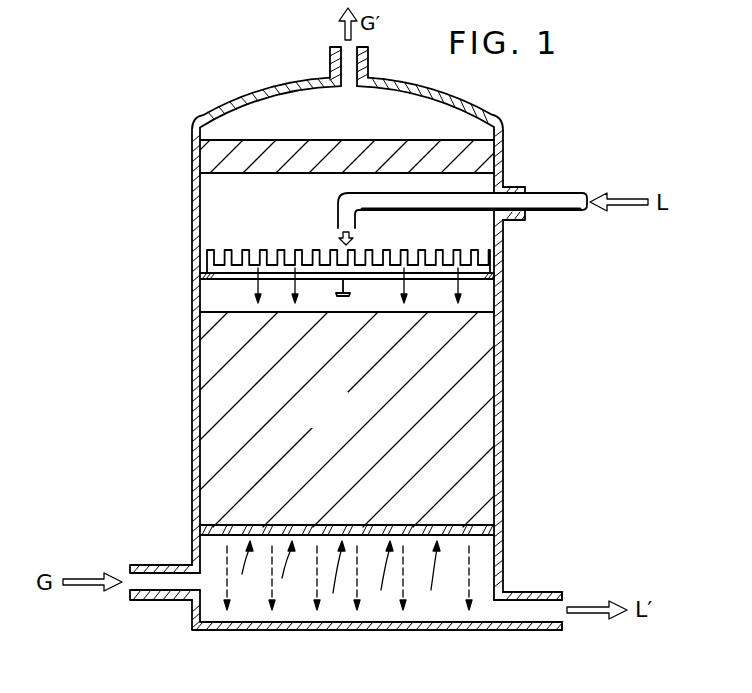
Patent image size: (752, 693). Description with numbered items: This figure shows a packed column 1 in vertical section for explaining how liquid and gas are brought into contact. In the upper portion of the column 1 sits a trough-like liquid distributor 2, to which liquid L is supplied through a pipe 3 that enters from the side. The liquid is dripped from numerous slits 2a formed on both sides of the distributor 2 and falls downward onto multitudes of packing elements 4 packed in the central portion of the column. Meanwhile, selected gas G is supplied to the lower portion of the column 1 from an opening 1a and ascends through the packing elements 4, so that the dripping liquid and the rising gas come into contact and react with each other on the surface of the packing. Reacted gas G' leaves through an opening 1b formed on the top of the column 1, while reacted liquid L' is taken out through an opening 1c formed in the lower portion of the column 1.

The packed column 1 is at (165, 342).
The opening 1a is at (120, 564).
The opening 1b is at (348, 85).
The opening 1c is at (568, 600).
The trough-like liquid distributor 2 is at (258, 246).
The slits 2a is at (297, 248).
The pipe 3 is at (555, 190).
The packing elements 4 is at (340, 423).